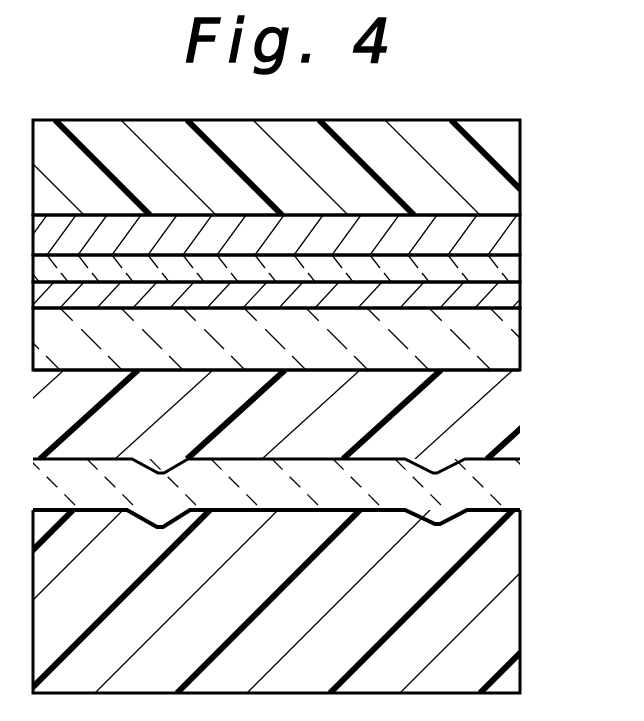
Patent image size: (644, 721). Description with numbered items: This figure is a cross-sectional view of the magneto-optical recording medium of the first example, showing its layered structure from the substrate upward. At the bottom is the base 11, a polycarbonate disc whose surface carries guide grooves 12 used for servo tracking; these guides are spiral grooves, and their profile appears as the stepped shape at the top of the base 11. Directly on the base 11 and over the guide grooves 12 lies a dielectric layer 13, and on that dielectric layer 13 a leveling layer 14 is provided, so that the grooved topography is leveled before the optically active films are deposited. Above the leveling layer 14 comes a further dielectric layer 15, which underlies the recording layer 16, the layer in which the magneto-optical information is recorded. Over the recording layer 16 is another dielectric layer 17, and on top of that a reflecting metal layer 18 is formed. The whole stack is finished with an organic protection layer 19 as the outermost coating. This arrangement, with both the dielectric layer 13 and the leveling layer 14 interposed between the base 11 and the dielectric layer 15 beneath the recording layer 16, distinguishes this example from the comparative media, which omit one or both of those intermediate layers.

The base 11 is at (508, 588).
The guide grooves 12 is at (448, 512).
The dielectric layer 13 is at (507, 470).
The leveling layer 14 is at (508, 408).
The dielectric layer 15 is at (507, 342).
The recording layer 16 is at (512, 294).
The dielectric layer 17 is at (513, 265).
The reflecting metal layer 18 is at (508, 231).
The organic protection layer 19 is at (508, 159).